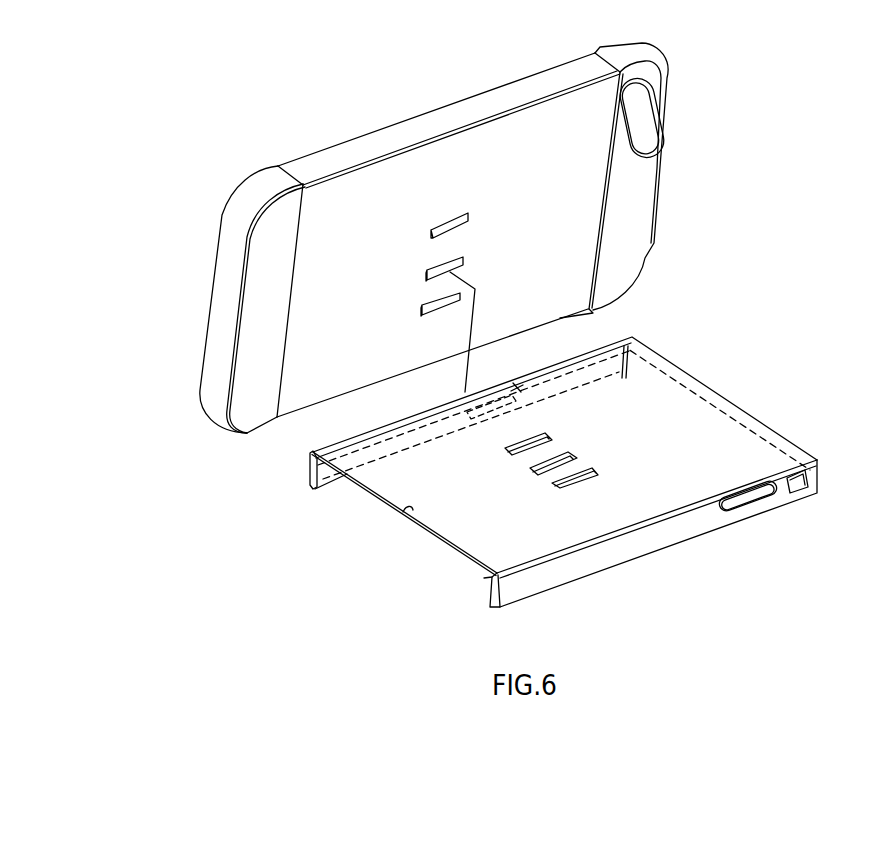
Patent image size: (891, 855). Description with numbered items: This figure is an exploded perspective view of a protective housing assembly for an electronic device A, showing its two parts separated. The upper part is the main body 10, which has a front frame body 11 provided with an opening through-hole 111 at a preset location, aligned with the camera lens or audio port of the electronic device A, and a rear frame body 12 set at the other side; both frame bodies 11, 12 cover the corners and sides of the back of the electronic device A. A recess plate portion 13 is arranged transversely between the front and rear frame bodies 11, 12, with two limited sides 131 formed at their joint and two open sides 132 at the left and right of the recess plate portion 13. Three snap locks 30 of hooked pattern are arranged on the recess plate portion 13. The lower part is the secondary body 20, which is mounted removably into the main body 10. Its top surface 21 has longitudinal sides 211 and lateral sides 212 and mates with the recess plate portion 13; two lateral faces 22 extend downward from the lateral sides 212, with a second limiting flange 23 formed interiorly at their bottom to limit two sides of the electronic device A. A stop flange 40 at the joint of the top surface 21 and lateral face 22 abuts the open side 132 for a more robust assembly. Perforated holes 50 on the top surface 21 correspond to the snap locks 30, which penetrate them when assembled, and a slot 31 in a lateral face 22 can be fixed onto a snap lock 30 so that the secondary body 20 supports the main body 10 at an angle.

The main body 10 is at (682, 193).
The front frame body 11 is at (632, 228).
The opening through-hole 111 is at (653, 113).
The rear frame body 12 is at (225, 292).
The recess plate portion 13 is at (570, 260).
The limited sides 131 is at (595, 255).
The open sides 132 is at (467, 118).
The electronic device A is at (403, 139).
The snap lock 30 is at (455, 227).
The slot 31 is at (517, 397).
The secondary body 20 is at (786, 427).
The top surface 21 is at (707, 452).
The longitudinal sides 211 is at (705, 387).
The lateral sides 212 is at (667, 496).
The lateral face 22 is at (632, 543).
The second limiting flange 23 is at (312, 490).
The stop flange 40 is at (484, 578).
The perforated holes 50 is at (562, 452).